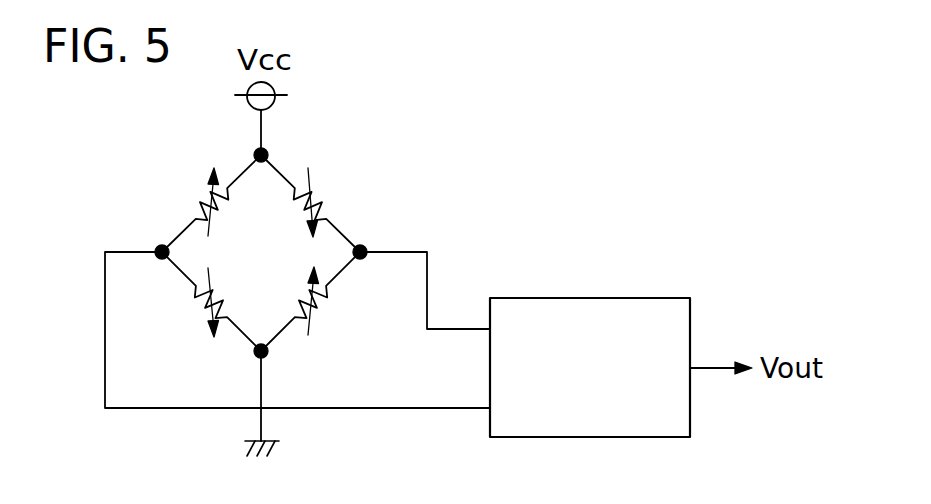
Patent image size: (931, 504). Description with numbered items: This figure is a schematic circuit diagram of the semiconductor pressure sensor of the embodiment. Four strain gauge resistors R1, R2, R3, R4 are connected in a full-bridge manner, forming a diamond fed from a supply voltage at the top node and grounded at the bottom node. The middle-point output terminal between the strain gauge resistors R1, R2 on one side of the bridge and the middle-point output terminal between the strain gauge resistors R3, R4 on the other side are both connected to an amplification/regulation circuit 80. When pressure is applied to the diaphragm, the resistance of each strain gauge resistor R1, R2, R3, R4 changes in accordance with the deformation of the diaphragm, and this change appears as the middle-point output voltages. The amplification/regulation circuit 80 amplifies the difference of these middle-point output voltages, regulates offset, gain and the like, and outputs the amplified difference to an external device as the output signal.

The strain gauge resistor R1 is at (200, 211).
The strain gauge resistor R2 is at (200, 290).
The strain gauge resistor R3 is at (324, 292).
The strain gauge resistor R4 is at (350, 195).
The amplification/regulation circuit 80 is at (627, 298).